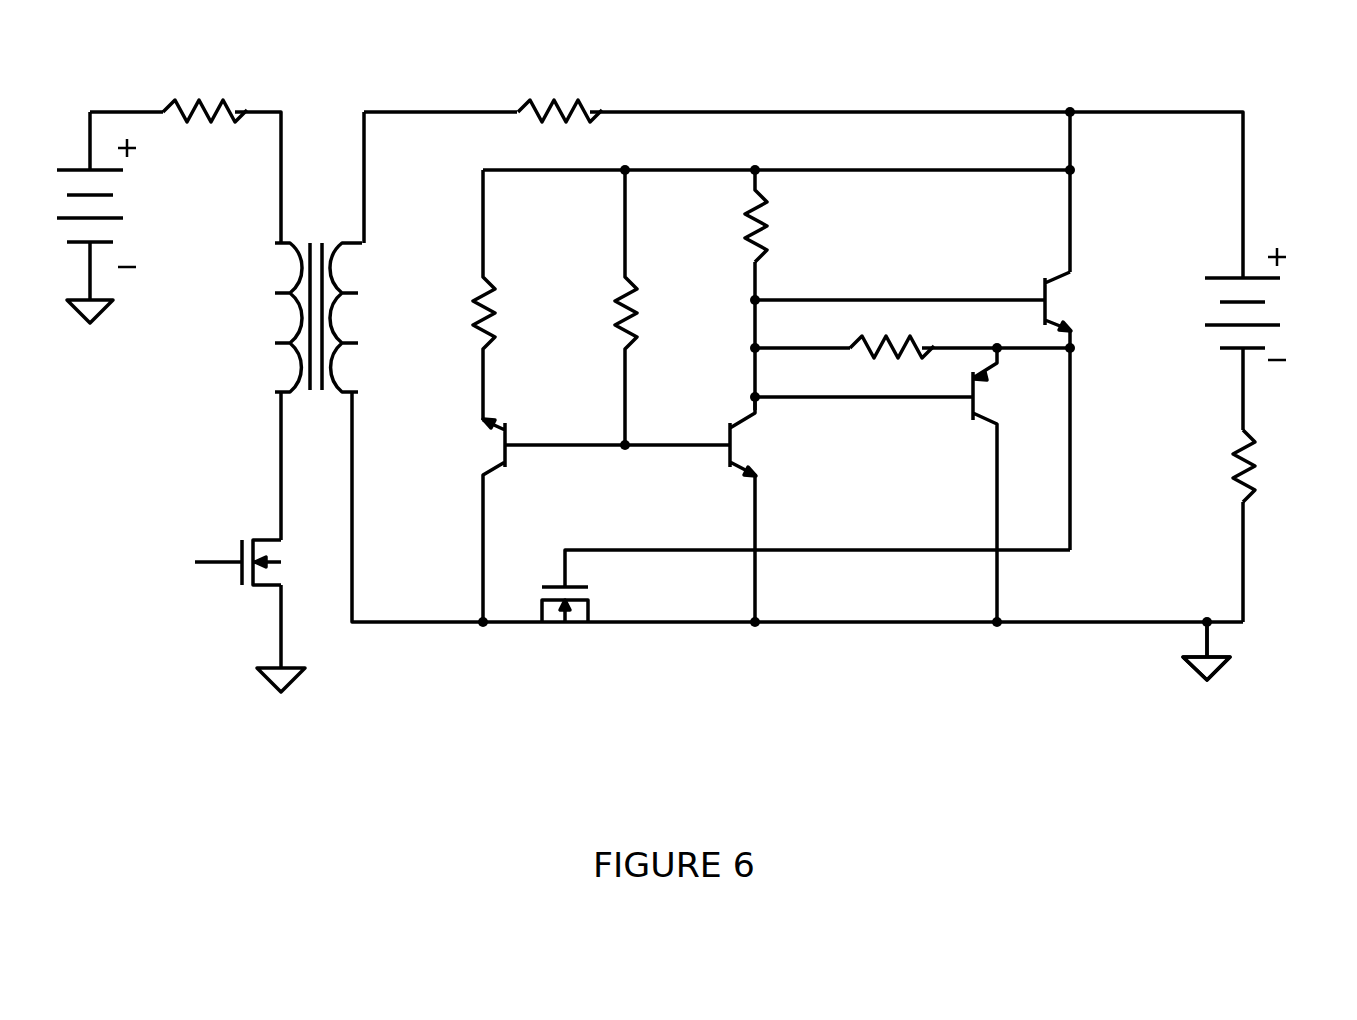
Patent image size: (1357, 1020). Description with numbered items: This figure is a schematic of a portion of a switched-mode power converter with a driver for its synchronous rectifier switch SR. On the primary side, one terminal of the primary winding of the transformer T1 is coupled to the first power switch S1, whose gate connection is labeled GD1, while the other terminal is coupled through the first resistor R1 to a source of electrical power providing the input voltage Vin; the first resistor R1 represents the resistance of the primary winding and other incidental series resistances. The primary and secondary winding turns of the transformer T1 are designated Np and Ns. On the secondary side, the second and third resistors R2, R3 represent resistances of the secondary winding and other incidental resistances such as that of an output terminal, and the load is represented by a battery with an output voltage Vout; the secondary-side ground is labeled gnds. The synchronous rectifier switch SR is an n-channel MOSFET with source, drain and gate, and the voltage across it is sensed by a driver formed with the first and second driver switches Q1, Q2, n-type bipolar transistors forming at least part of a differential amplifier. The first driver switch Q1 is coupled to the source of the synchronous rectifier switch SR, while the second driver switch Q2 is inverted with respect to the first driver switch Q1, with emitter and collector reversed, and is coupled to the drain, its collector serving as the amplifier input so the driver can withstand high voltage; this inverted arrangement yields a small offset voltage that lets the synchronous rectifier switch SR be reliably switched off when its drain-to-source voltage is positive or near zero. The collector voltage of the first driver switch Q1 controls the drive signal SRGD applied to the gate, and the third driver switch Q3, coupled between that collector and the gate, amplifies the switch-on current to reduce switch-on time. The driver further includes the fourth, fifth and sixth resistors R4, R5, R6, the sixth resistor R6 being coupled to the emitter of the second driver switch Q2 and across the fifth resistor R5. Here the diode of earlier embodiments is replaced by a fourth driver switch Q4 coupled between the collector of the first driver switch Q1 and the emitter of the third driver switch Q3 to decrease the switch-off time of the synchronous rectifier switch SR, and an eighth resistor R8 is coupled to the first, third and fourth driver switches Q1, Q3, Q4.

The input voltage Vin is at (119, 189).
The first resistor R1 is at (205, 92).
The second resistor R2 is at (560, 93).
The third resistor R3 is at (1214, 466).
The fourth resistor R4 is at (786, 216).
The fifth resistor R5 is at (657, 307).
The sixth resistor R6 is at (509, 295).
The eighth resistor R8 is at (892, 335).
The transformer T1 is at (321, 252).
The turns of the primary winding Np is at (269, 317).
The turns of the secondary winding Ns is at (367, 252).
The first power switch S1 is at (284, 561).
The gate drive of primary switch GD1 is at (207, 585).
The first driver switch Q1 is at (764, 508).
The second driver switch Q2 is at (483, 508).
The third driver switch Q3 is at (1073, 301).
The fourth driver switch Q4 is at (989, 485).
The drive signal SRGD is at (817, 544).
The synchronous rectifier switch SR is at (565, 620).
The output voltage Vout is at (1278, 304).
The secondary ground gnds is at (1244, 660).